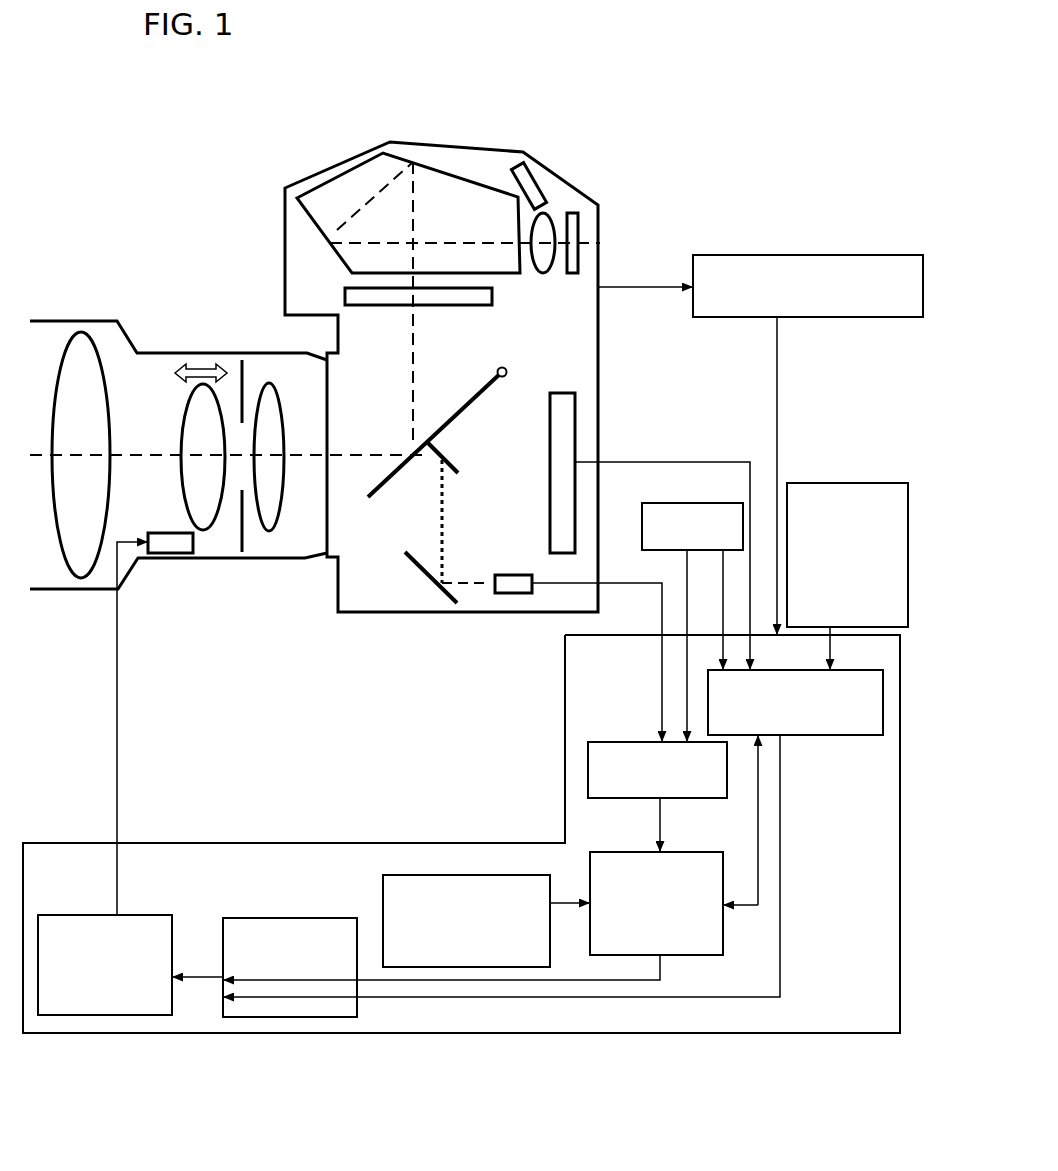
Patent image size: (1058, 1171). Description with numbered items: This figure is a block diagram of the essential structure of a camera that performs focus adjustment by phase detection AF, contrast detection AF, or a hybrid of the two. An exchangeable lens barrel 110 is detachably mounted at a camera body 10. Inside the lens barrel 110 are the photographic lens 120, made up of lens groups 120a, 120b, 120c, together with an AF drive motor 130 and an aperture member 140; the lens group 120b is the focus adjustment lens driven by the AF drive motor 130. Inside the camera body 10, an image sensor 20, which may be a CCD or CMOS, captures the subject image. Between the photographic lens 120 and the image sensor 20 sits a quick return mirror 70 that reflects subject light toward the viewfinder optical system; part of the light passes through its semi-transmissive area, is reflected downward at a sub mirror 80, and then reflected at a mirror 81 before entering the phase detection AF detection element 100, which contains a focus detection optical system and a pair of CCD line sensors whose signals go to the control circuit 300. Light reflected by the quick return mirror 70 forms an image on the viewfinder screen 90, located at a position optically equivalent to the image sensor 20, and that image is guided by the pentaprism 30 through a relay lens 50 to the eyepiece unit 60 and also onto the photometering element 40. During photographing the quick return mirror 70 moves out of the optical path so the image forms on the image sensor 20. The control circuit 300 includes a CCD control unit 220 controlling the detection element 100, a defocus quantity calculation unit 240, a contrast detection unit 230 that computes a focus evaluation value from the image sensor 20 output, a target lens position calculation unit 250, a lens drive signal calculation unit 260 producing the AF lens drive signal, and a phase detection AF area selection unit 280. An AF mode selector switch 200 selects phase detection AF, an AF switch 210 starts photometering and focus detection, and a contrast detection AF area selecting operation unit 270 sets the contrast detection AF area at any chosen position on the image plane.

The camera body 10 is at (441, 361).
The image sensor 20 is at (607, 469).
The pentaprism 30 is at (435, 288).
The photometering element 40 is at (541, 157).
The relay lens 50 is at (587, 201).
The eyepiece unit 60 is at (618, 224).
The quick return mirror 70 is at (444, 414).
The sub mirror 80 is at (474, 509).
The mirror 81 is at (406, 571).
The viewfinder screen 90 is at (457, 308).
The phase detection AF detection element 100 is at (481, 609).
The lens barrel 110 is at (178, 428).
The photographic lens 120 is at (156, 436).
The lens group 120a is at (63, 484).
The focus adjustment lens 120b is at (238, 495).
The lens group 120c is at (230, 409).
The AF drive motor 130 is at (181, 724).
The aperture member 140 is at (203, 432).
The AF mode selector switch 200 is at (760, 432).
The AF switch 210 is at (689, 611).
The CCD control unit 220 is at (656, 785).
The contrast detection unit 230 is at (554, 822).
The defocus quantity calculation unit 240 is at (473, 903).
The target lens position calculation unit 250 is at (266, 956).
The lens drive signal calculation unit 260 is at (106, 953).
The contrast detection AF area selecting operation unit 270 is at (847, 552).
The phase detection AF area selection unit 280 is at (486, 910).
The control circuit 300 is at (473, 631).